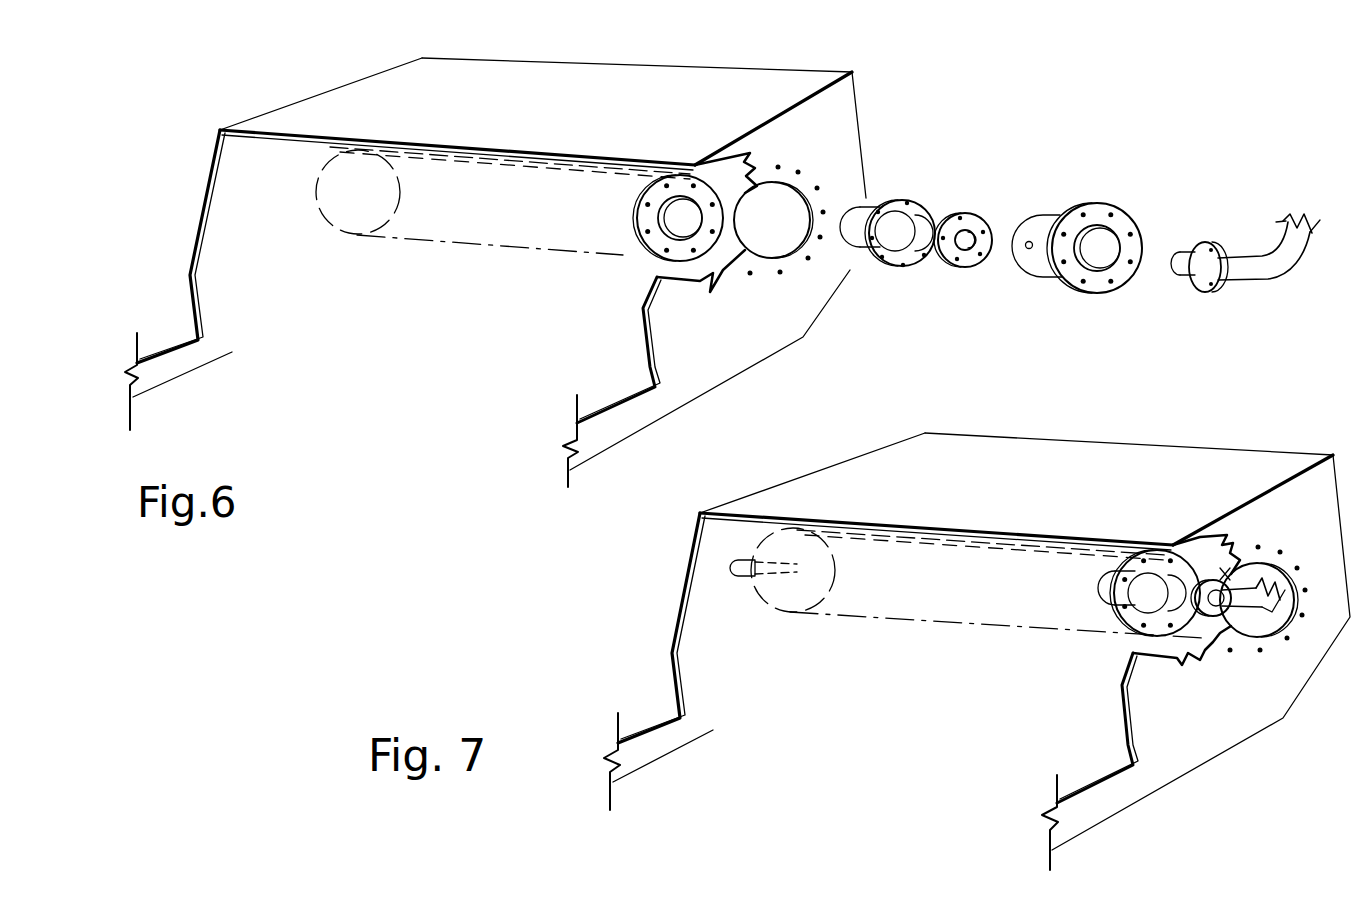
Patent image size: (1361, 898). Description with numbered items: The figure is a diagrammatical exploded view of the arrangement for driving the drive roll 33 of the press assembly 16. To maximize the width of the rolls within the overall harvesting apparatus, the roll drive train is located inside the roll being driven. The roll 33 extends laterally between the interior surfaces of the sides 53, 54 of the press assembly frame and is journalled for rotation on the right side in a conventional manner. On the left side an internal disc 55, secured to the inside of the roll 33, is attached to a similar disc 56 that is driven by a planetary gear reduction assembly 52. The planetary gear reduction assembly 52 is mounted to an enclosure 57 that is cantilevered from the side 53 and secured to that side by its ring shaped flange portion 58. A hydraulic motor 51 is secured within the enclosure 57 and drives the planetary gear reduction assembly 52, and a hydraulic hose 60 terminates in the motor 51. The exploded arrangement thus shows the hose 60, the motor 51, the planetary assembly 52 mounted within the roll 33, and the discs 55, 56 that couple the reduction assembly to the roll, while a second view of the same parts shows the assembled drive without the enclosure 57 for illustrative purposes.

In FIG. 6, the press assembly 16 is at (618, 62).
In FIG. 7, the press assembly 16 is at (1025, 651).
In FIG. 6, the drive roll 33 is at (463, 252).
In FIG. 7, the drive roll 33 is at (891, 630).
In FIG. 6, the hydraulic motor 51 is at (1177, 257).
In FIG. 6, the planetary gear reduction assembly 52 is at (930, 200).
In FIG. 7, the planetary gear reduction assembly 52 is at (1211, 592).
In FIG. 6, the side 53 is at (772, 318).
In FIG. 7, the side 53 is at (1314, 554).
In FIG. 6, the side 54 is at (192, 250).
In FIG. 7, the side 54 is at (675, 620).
In FIG. 6, the internal disc 55 is at (650, 255).
In FIG. 6, the disc 56 is at (900, 203).
In FIG. 7, the disc 56 is at (1123, 640).
In FIG. 6, the enclosure 57 is at (1095, 228).
In FIG. 6, the ring shaped flange portion 58 is at (1087, 288).
In FIG. 6, the hydraulic hose 60 is at (1273, 268).
In FIG. 7, the hydraulic hose 60 is at (1253, 595).